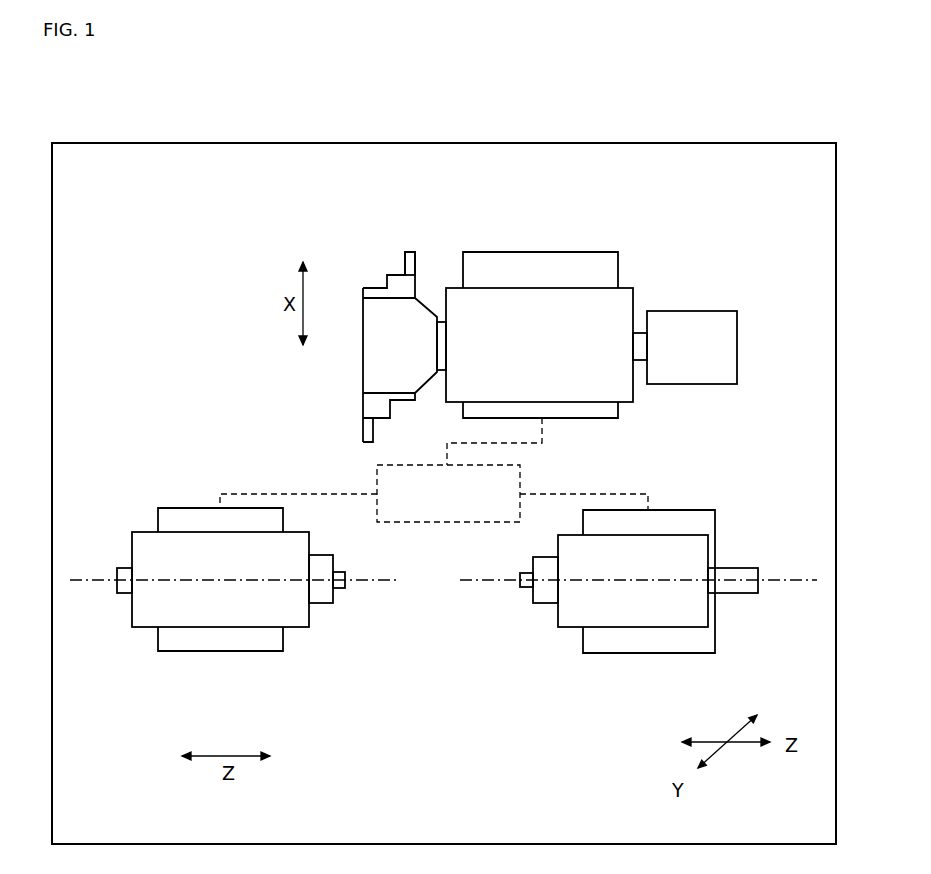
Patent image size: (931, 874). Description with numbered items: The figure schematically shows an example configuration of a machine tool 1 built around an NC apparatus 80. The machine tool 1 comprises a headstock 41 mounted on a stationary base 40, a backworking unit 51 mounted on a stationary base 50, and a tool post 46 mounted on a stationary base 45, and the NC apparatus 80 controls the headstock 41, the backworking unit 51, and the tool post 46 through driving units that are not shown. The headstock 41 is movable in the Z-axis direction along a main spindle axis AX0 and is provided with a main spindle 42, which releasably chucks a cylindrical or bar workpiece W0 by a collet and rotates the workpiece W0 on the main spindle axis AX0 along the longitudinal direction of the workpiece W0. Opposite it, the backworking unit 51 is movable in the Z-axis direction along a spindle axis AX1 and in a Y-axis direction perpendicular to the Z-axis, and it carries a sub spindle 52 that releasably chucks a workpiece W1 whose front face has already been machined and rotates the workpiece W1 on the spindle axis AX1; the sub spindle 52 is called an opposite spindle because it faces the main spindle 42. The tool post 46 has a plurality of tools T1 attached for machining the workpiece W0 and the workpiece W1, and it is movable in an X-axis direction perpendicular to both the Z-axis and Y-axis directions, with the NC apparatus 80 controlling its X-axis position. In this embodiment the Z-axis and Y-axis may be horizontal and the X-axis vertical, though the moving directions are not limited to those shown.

The machine tool 1 is at (83, 114).
The tools T1 is at (412, 255).
The stationary base 45 is at (498, 252).
The tool post 46 is at (575, 288).
The NC apparatus 80 is at (434, 470).
The stationary base 40 is at (188, 651).
The headstock 41 is at (132, 627).
The main spindle 42 is at (327, 603).
The workpiece W0 is at (345, 582).
The main spindle axis AX0 is at (93, 580).
The stationary base 50 is at (667, 653).
The backworking unit 51 is at (627, 627).
The sub spindle 52 is at (537, 603).
The workpiece W1 is at (520, 582).
The spindle axis AX1 is at (793, 580).